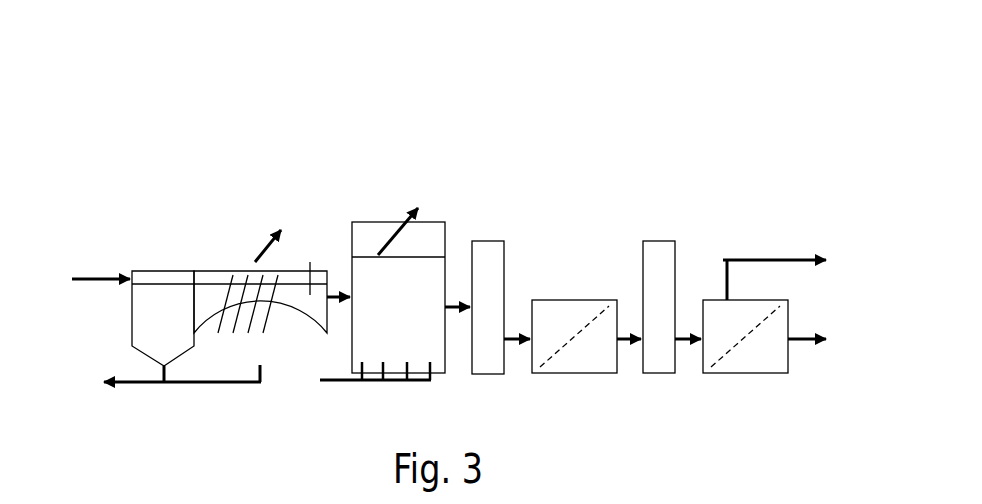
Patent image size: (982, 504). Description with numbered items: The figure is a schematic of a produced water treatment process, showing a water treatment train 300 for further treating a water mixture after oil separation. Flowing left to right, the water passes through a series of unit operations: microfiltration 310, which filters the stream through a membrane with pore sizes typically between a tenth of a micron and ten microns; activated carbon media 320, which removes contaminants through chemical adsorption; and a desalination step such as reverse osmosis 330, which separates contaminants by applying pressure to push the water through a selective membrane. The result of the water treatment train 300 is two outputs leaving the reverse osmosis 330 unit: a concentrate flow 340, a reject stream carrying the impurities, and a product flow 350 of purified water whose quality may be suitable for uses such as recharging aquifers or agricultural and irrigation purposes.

The water treatment train 300 is at (194, 88).
The microfiltration 310 is at (597, 373).
The activated carbon media 320 is at (667, 373).
The reverse osmosis 330 is at (717, 373).
The concentrate flow 340 is at (740, 263).
The product flow 350 is at (803, 335).